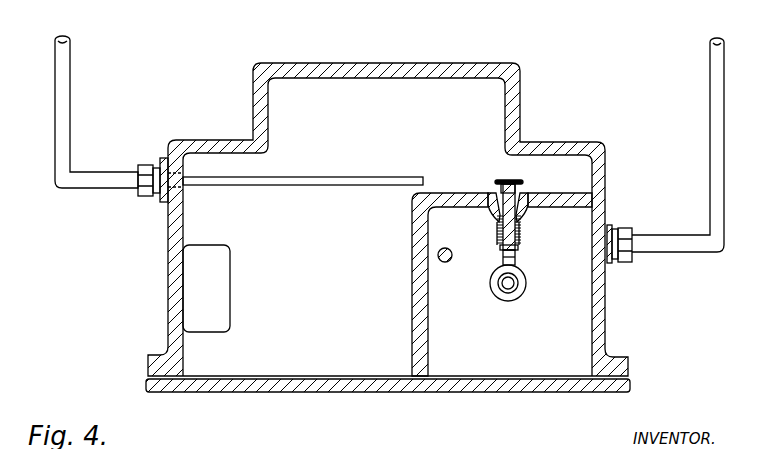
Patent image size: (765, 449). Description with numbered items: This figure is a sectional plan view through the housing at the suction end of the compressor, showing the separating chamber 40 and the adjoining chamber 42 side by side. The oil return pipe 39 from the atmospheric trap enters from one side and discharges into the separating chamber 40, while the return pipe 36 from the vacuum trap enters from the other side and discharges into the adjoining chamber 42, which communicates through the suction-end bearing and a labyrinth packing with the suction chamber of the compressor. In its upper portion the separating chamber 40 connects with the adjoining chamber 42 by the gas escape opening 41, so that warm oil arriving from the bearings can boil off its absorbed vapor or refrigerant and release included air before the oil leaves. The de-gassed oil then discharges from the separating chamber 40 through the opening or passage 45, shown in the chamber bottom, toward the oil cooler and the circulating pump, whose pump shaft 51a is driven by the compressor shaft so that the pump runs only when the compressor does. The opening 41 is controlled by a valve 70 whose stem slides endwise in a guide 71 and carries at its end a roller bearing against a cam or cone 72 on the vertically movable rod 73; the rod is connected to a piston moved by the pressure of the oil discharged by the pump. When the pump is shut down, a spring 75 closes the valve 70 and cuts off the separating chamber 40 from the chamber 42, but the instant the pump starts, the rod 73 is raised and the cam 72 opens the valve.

The return pipe 36 is at (713, 177).
The oil return pipe 39 is at (107, 173).
The separating chamber 40 is at (388, 219).
The opening 41 is at (522, 192).
The adjoining chamber 42 is at (502, 284).
The opening or passage 45 is at (206, 288).
The pump shaft 51a is at (452, 258).
The valve 70 is at (500, 180).
The guide 71 is at (520, 236).
The cam or cone 72 is at (498, 291).
The vertically movable rod 73 is at (520, 292).
The spring 75 is at (500, 237).